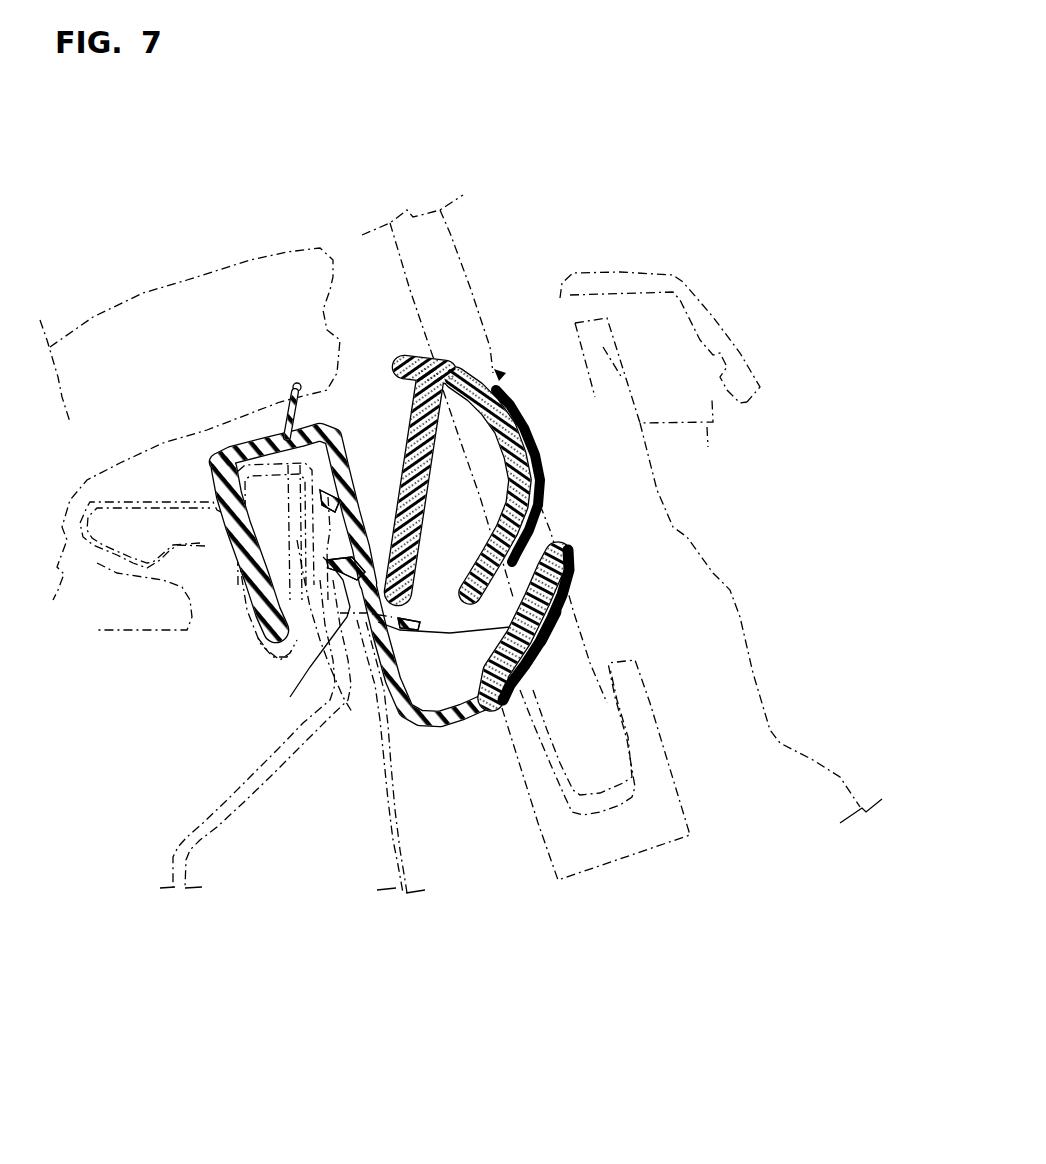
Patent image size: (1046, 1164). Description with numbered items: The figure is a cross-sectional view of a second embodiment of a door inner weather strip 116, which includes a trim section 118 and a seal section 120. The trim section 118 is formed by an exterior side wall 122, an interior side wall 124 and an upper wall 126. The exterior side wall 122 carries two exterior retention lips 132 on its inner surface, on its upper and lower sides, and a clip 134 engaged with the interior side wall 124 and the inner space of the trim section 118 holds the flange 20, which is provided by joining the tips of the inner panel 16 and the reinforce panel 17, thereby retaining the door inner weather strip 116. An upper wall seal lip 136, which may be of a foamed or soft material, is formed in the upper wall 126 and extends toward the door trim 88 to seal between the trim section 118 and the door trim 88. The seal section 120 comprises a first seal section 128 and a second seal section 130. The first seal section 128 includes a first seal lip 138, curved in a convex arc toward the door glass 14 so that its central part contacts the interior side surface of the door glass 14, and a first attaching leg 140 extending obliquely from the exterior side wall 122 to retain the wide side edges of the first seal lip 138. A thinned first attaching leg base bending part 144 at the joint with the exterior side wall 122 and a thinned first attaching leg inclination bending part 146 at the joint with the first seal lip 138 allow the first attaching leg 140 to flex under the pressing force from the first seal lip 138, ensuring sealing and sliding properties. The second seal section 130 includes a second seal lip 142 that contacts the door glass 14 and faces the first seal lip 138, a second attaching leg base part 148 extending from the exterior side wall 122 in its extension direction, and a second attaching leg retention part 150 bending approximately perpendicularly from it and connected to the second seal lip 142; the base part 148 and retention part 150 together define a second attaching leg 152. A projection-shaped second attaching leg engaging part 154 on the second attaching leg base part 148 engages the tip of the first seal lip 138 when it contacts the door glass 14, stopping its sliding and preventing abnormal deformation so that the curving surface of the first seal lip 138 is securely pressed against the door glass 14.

The door glass 14 is at (484, 416).
The inner panel 16 is at (256, 763).
The reinforce panel 17 is at (374, 803).
The flange 20 is at (201, 364).
The door trim 88 is at (188, 364).
The door inner weather strip 116 is at (257, 575).
The trim section 118 is at (236, 594).
The seal section 120 is at (605, 360).
The exterior side wall 122 is at (340, 350).
The interior side wall 124 is at (328, 633).
The upper wall 126 is at (201, 294).
The first seal section 128 is at (559, 345).
The second seal section 130 is at (660, 597).
The exterior retention lips 132 is at (232, 508).
The clip 134 is at (150, 579).
The upper wall seal lip 136 is at (275, 282).
The first seal lip 138 is at (565, 289).
The first attaching leg 140 is at (393, 350).
The second seal lip 142 is at (666, 597).
The first attaching leg base bending part 144 is at (625, 490).
The first attaching leg inclination bending part 146 is at (479, 360).
The second attaching leg base part 148 is at (538, 822).
The second attaching leg retention part 150 is at (667, 651).
The second attaching leg 152 is at (591, 628).
The second attaching leg engaging part 154 is at (685, 588).